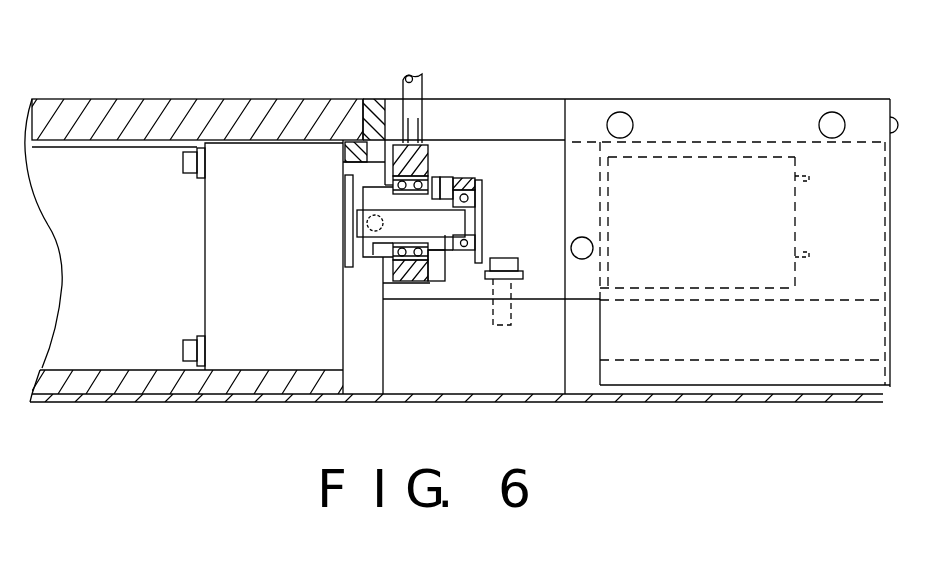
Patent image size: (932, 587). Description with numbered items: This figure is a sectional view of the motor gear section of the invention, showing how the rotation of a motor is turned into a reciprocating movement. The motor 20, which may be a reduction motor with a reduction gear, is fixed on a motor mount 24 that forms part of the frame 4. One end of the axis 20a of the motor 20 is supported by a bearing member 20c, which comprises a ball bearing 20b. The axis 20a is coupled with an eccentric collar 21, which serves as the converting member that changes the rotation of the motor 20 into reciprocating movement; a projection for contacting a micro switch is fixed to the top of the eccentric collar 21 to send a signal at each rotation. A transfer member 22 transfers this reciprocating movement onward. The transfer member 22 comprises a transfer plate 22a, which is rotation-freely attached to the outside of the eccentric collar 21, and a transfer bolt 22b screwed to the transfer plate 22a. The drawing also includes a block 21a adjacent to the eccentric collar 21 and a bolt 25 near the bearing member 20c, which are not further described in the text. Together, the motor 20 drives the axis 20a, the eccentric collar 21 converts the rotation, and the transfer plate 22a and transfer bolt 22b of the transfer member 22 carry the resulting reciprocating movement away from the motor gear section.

The frame 4 is at (115, 353).
The motor 20 is at (222, 265).
The axis 20a is at (395, 210).
The ball bearing 20b is at (455, 182).
The bearing member 20c is at (474, 268).
The eccentric collar 21 is at (372, 252).
The lower support block 21a is at (416, 285).
The transfer member 22 is at (437, 160).
The transfer plate 22a is at (385, 283).
The transfer bolt 22b is at (426, 83).
The motor mount 24 is at (326, 107).
The bolt 25 is at (440, 273).